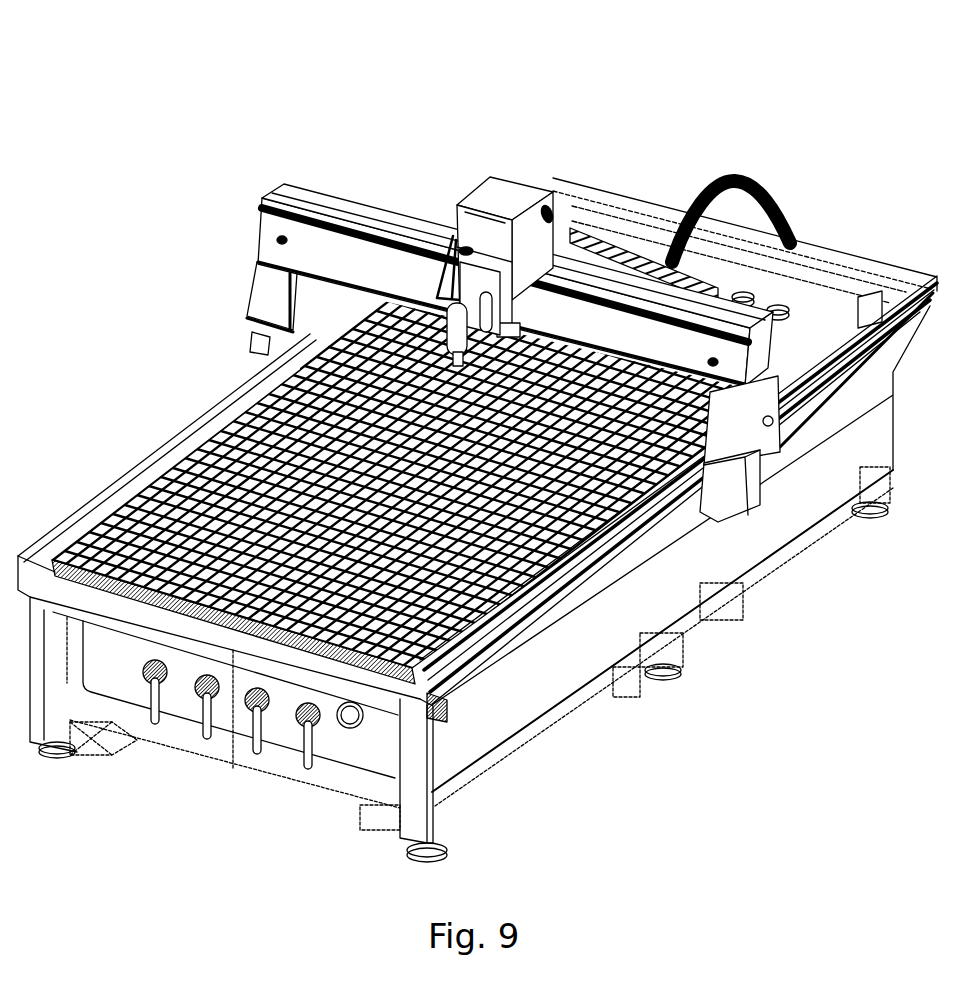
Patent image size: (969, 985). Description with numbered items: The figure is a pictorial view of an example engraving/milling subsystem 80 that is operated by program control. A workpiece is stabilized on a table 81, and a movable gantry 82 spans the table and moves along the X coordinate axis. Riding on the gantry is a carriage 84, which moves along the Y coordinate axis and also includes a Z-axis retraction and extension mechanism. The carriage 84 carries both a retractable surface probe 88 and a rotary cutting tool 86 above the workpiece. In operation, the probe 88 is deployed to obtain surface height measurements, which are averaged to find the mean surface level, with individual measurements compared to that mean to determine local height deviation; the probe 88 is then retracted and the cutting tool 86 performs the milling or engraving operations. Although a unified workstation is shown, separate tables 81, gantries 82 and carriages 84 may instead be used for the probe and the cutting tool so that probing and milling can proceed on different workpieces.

The engraving/milling subsystem 80 is at (608, 118).
The table 81 is at (200, 507).
The movable gantry 82 is at (317, 190).
The carriage 84 is at (503, 188).
The rotary cutting tool 86 is at (467, 293).
The retractable surface probe 88 is at (458, 330).